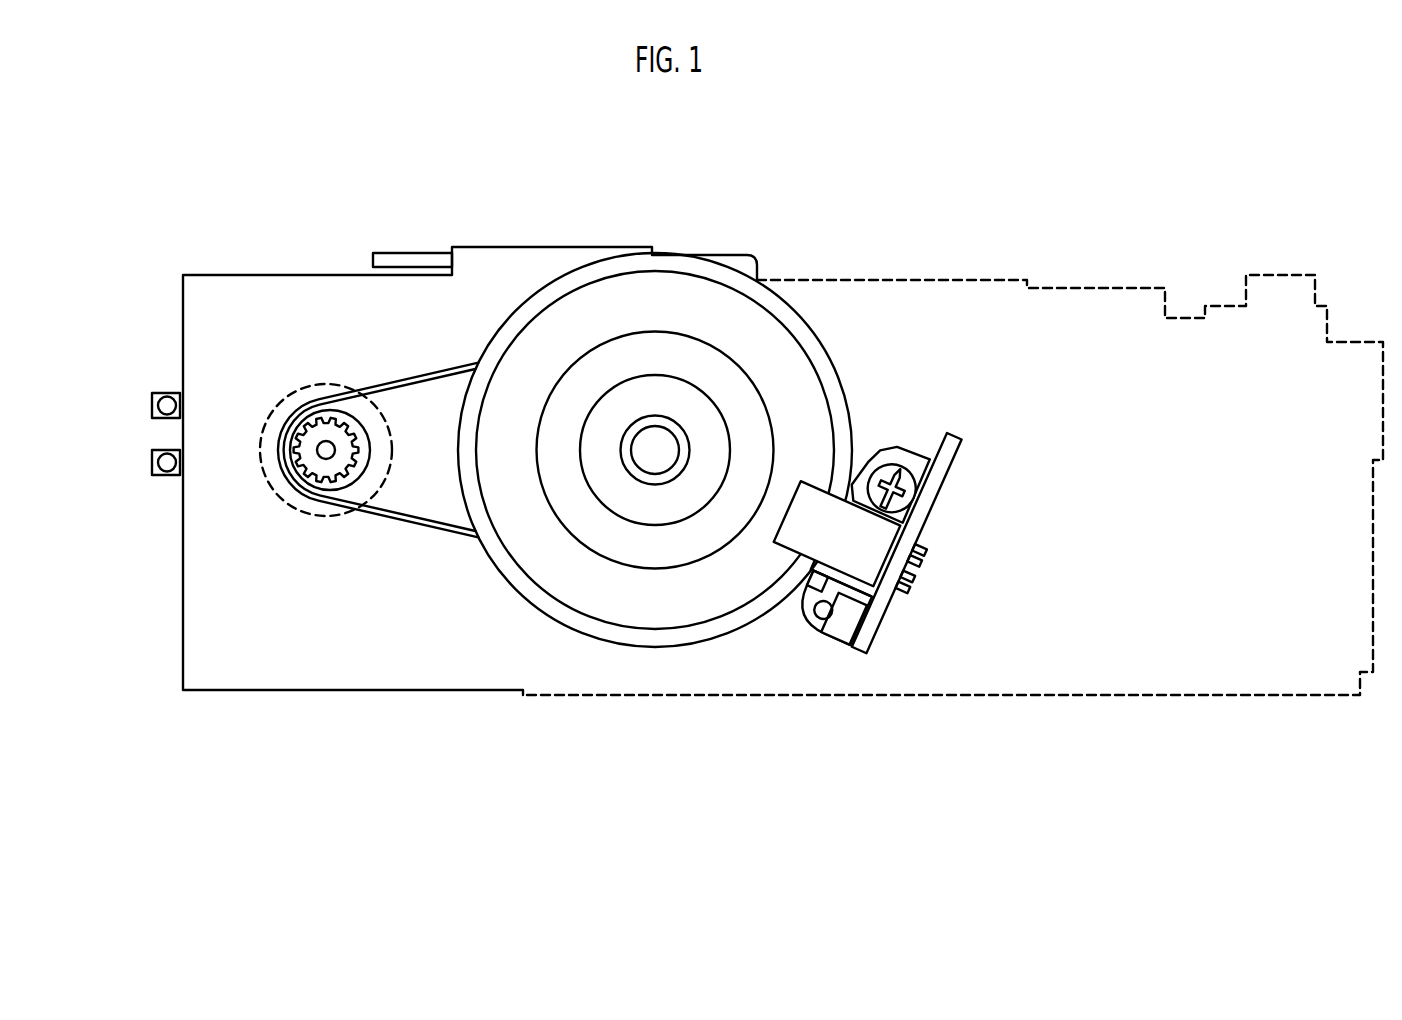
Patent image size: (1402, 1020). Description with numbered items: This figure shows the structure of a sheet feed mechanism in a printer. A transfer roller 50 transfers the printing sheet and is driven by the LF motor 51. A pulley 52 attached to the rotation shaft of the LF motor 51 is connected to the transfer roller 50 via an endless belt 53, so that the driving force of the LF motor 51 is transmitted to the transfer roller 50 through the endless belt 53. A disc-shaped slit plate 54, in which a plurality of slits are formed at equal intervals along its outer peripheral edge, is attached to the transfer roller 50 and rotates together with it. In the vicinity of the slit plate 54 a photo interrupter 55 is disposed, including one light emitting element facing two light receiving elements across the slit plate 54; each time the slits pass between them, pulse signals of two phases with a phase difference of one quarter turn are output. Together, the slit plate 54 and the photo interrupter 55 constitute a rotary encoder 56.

The transfer roller 50 is at (671, 421).
The motor 51 is at (331, 384).
The pulley 52 is at (313, 463).
The endless belt 53 is at (437, 377).
The slit plate 54 is at (730, 595).
The photo interrupter 55 is at (863, 556).
The rotary encoder 56 is at (715, 497).